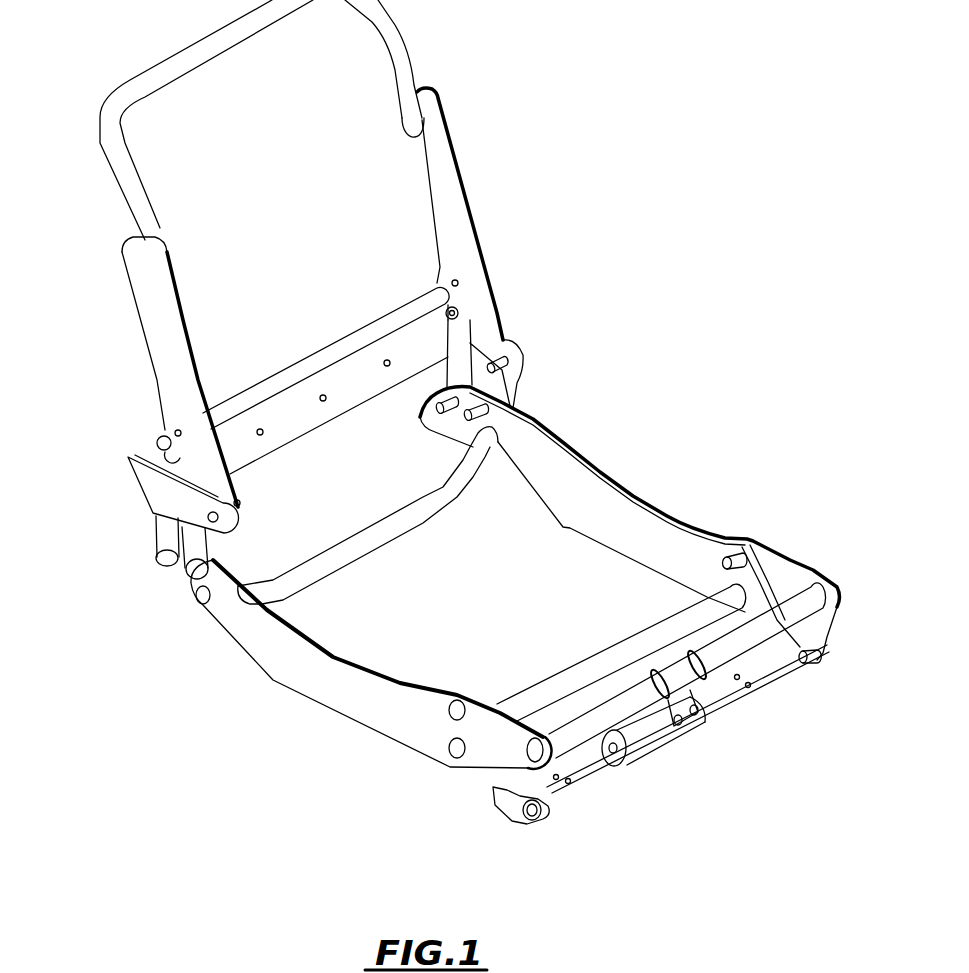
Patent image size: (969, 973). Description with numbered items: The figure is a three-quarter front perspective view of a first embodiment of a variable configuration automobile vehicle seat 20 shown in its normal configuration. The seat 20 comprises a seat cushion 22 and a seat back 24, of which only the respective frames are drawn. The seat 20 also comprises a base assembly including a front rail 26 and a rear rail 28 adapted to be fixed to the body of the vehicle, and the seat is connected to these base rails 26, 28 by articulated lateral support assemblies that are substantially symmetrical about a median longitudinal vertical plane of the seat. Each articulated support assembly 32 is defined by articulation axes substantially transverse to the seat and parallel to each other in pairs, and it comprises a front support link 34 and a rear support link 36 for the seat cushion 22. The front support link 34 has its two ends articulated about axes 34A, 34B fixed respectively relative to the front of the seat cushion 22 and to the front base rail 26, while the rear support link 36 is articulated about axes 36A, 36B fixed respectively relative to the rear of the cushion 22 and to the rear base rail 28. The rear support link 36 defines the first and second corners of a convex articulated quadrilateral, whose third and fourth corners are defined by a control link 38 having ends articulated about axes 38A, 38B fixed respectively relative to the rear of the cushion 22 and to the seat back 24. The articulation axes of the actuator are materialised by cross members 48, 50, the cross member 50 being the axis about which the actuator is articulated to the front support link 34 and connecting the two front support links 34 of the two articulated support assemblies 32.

The seat 20 is at (729, 340).
The seat cushion 22 is at (650, 490).
The seat back 24 is at (486, 220).
The front rail 26 is at (495, 817).
The rear rail 28 is at (143, 496).
The articulated support assembly 32 is at (165, 600).
The front support link 34 is at (750, 573).
The articulation axis 34A is at (728, 548).
The articulation axis 34B is at (812, 663).
The rear support link 36 is at (500, 397).
The articulation axis 36A is at (468, 415).
The articulation axis 36B is at (508, 348).
The control link 38 is at (458, 357).
The articulation axis 38A is at (441, 408).
The articulation axis 38B is at (458, 318).
The cross member 48 is at (725, 642).
The cross member 50 is at (590, 698).